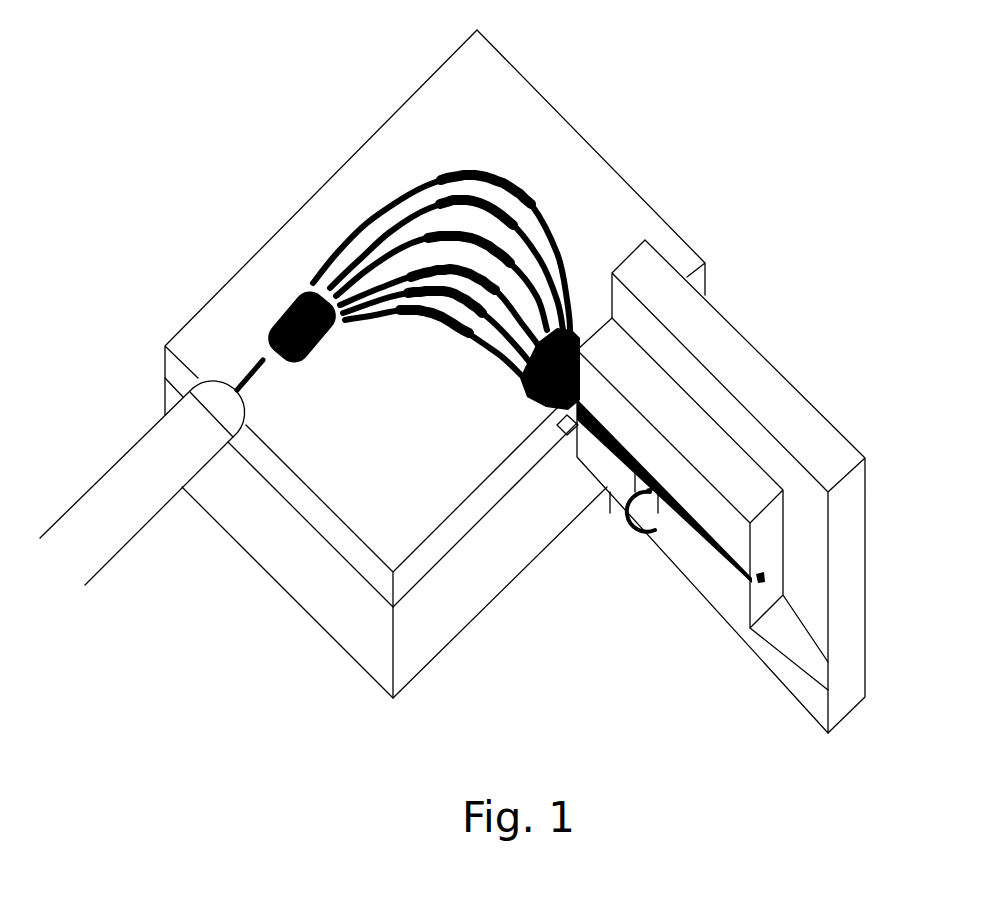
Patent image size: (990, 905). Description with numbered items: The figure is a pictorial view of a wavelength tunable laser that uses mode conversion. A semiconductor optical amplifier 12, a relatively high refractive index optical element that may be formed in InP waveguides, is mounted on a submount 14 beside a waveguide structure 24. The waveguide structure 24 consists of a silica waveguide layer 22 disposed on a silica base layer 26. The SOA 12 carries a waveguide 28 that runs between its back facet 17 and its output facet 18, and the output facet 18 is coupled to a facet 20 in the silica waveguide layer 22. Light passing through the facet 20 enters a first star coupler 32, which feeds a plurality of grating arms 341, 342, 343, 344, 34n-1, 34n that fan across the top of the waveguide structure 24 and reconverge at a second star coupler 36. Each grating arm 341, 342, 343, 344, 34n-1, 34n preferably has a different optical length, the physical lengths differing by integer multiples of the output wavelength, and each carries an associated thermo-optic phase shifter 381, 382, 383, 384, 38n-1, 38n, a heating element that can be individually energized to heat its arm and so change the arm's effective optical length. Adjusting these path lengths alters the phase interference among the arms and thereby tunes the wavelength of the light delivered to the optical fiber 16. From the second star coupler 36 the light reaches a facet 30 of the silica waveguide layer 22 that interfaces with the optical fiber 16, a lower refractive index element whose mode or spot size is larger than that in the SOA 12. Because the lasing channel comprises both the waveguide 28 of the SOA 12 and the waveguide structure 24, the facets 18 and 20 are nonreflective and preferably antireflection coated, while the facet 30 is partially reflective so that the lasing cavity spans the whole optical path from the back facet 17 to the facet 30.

The semiconductor optical amplifier 12 is at (692, 550).
The submount 14 is at (810, 405).
The optical fiber 16 is at (143, 505).
The back facet 17 is at (763, 585).
The output facet 18 is at (590, 406).
The facet 20 is at (562, 432).
The silica waveguide layer 22 is at (420, 562).
The waveguide structure 24 is at (408, 667).
The silica base layer 26 is at (320, 587).
The waveguide 28 is at (725, 553).
The facet 30 is at (247, 412).
The first star coupler 32 is at (528, 395).
The grating arm 34n is at (367, 217).
The grating arm 34n-1 is at (410, 215).
The grating arm 344 is at (372, 260).
The grating arm 343 is at (350, 290).
The grating arm 342 is at (574, 296).
The grating arm 341 is at (373, 328).
The second star coupler 36 is at (332, 348).
The phase shifter 38n is at (478, 178).
The phase shifter 38n-1 is at (517, 223).
The phase shifter 384 is at (467, 230).
The phase shifter 383 is at (462, 285).
The phase shifter 382 is at (425, 303).
The phase shifter 381 is at (450, 337).